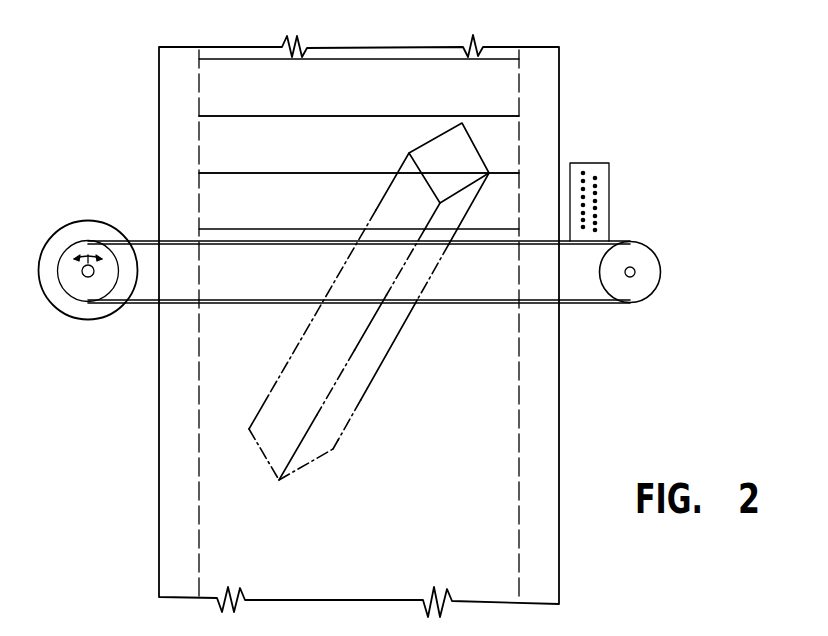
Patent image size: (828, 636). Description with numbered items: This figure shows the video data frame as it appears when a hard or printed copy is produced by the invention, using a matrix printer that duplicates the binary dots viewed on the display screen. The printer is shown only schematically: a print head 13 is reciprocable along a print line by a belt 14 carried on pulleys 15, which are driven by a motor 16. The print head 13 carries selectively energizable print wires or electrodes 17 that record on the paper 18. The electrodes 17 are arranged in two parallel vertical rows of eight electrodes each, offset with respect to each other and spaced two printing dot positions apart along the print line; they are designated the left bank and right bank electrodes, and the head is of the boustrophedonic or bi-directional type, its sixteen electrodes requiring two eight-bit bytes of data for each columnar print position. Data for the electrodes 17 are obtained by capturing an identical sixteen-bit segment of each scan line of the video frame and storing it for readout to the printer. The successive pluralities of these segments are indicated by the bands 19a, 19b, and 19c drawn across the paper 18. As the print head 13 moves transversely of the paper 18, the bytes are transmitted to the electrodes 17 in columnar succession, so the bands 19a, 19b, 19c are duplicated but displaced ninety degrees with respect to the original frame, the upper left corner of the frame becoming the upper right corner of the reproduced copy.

The print head 13 is at (585, 163).
The belt 14 is at (602, 305).
The pulleys 15 is at (89, 288).
The motor 16 is at (70, 223).
The print wires or electrodes 17 is at (595, 182).
The paper 18 is at (560, 82).
The band 19a is at (197, 59).
The band 19b is at (197, 116).
The band 19c is at (197, 173).